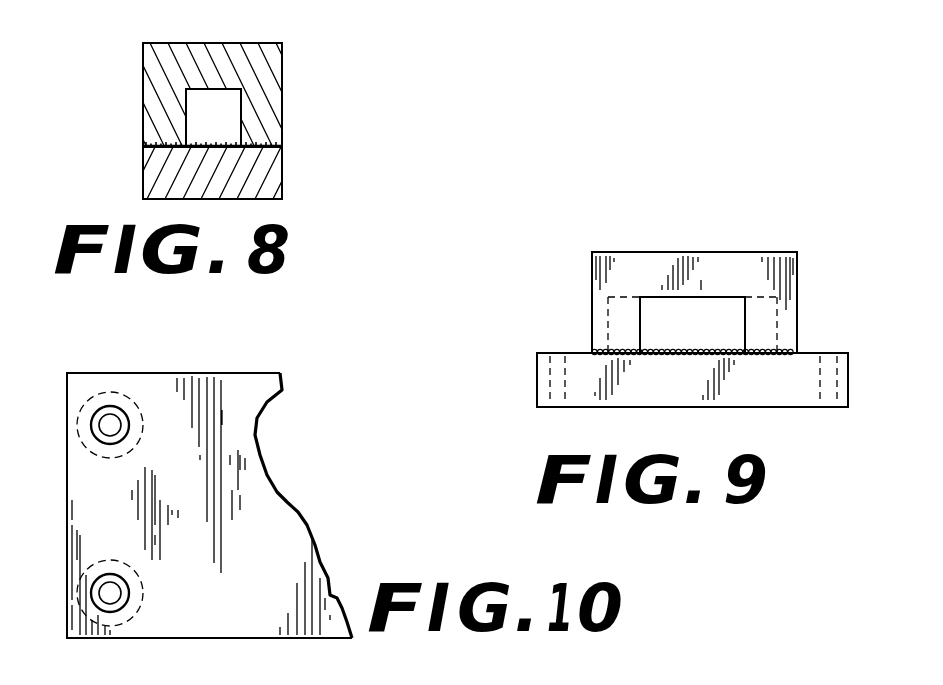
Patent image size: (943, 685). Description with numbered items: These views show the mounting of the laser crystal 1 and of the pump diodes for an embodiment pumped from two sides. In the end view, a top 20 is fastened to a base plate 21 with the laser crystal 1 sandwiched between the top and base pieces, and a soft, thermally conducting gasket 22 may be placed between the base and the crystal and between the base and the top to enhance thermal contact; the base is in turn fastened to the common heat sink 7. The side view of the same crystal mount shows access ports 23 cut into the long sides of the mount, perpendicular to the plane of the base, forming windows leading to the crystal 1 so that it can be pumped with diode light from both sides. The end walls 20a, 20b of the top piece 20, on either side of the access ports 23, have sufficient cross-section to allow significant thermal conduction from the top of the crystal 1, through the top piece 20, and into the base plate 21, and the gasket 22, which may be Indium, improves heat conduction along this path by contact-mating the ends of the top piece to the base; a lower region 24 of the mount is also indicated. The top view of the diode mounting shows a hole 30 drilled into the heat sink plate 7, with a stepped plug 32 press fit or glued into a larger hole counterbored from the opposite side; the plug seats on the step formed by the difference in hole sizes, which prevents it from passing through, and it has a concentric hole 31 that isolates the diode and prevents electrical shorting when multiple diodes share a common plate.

In FIG. 8, the laser crystal 1 is at (227, 104).
In FIG. 9, the laser crystal 1 is at (777, 296).
In FIG. 10, the common heat sink 7 is at (240, 528).
In FIG. 8, the top 20 is at (187, 43).
In FIG. 9, the top 20 is at (700, 252).
In FIG. 9, the end wall 20a is at (592, 310).
In FIG. 9, the end wall 20b is at (787, 312).
In FIG. 8, the base plate 21 is at (153, 178).
In FIG. 9, the base plate 21 is at (590, 407).
In FIG. 8, the gasket 22 is at (283, 147).
In FIG. 9, the gasket 22 is at (803, 353).
In FIG. 9, the access ports 23 is at (655, 297).
In FIG. 9, the base mounting portion 24 is at (557, 353).
In FIG. 10, the hole 30 is at (92, 418).
In FIG. 10, the concentric hole 31 is at (111, 420).
In FIG. 10, the stepped plug 32 is at (91, 452).